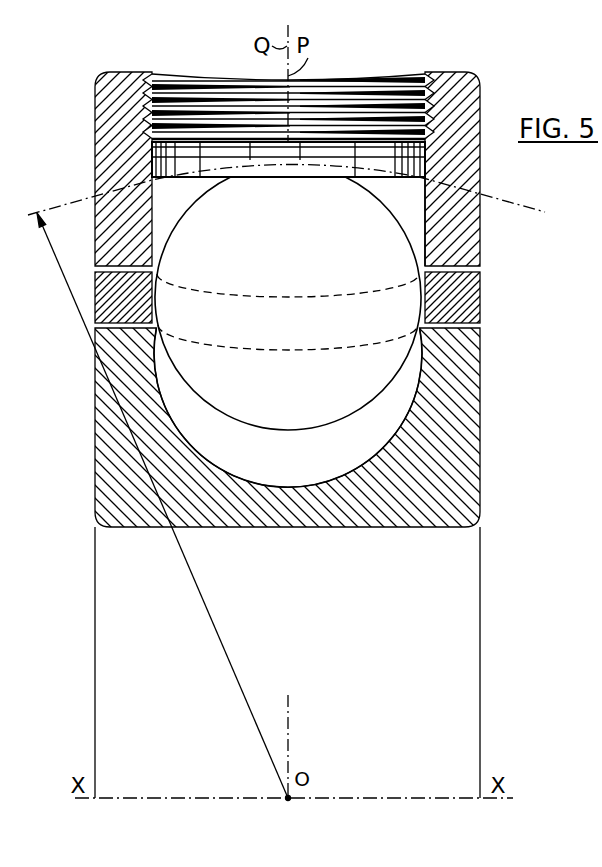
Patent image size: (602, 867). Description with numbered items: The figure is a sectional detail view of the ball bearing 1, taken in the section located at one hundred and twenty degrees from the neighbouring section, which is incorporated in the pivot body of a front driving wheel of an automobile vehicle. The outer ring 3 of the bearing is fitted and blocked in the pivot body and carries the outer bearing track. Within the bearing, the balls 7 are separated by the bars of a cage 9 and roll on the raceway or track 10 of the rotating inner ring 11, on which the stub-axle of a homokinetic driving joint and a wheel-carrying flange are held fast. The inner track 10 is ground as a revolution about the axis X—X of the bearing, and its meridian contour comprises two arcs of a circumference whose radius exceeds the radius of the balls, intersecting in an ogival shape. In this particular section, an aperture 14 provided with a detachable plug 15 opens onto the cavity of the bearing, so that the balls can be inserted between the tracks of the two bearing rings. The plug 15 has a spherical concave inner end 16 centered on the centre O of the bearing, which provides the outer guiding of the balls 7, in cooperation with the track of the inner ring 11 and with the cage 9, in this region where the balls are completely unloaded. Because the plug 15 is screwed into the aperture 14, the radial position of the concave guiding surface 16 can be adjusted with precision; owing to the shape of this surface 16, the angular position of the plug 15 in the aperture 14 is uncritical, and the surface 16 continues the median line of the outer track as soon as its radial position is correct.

The ball bearing 1 is at (90, 528).
The outer ring 3 is at (460, 100).
The balls 7 is at (202, 234).
The cage 9 is at (456, 302).
The inner raceway or track 10 is at (354, 409).
The rotating inner ring 11 is at (470, 458).
The aperture 14 is at (422, 208).
The detachable plug 15 is at (366, 100).
The spherical concave inner end 16 is at (360, 176).